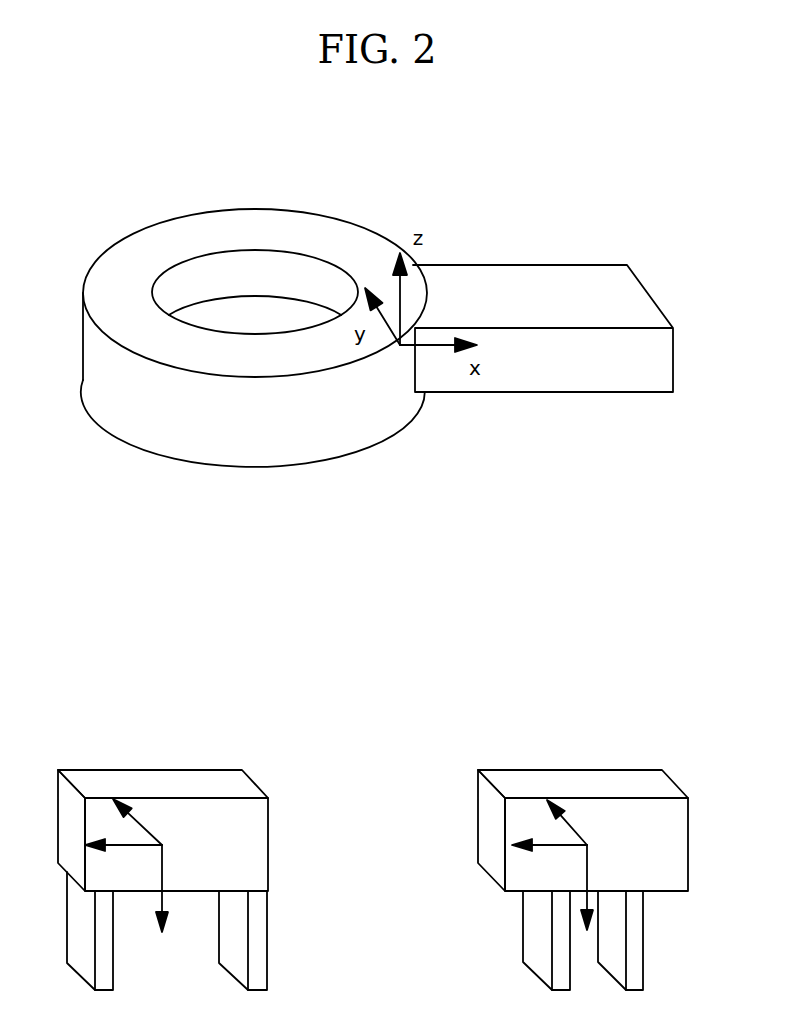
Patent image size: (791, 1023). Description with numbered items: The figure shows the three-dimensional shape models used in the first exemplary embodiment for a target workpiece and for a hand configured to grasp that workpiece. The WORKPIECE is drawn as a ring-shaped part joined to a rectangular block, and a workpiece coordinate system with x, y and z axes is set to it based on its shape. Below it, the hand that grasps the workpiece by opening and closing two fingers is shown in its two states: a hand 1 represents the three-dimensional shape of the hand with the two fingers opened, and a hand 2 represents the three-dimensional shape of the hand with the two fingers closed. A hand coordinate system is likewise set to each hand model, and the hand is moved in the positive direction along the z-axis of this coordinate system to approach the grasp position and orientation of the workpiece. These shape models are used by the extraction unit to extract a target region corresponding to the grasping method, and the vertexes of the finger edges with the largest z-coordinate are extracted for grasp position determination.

The hand 1 is at (187, 780).
The hand 2 is at (638, 780).
The workpiece WORKPIECE is at (578, 280).